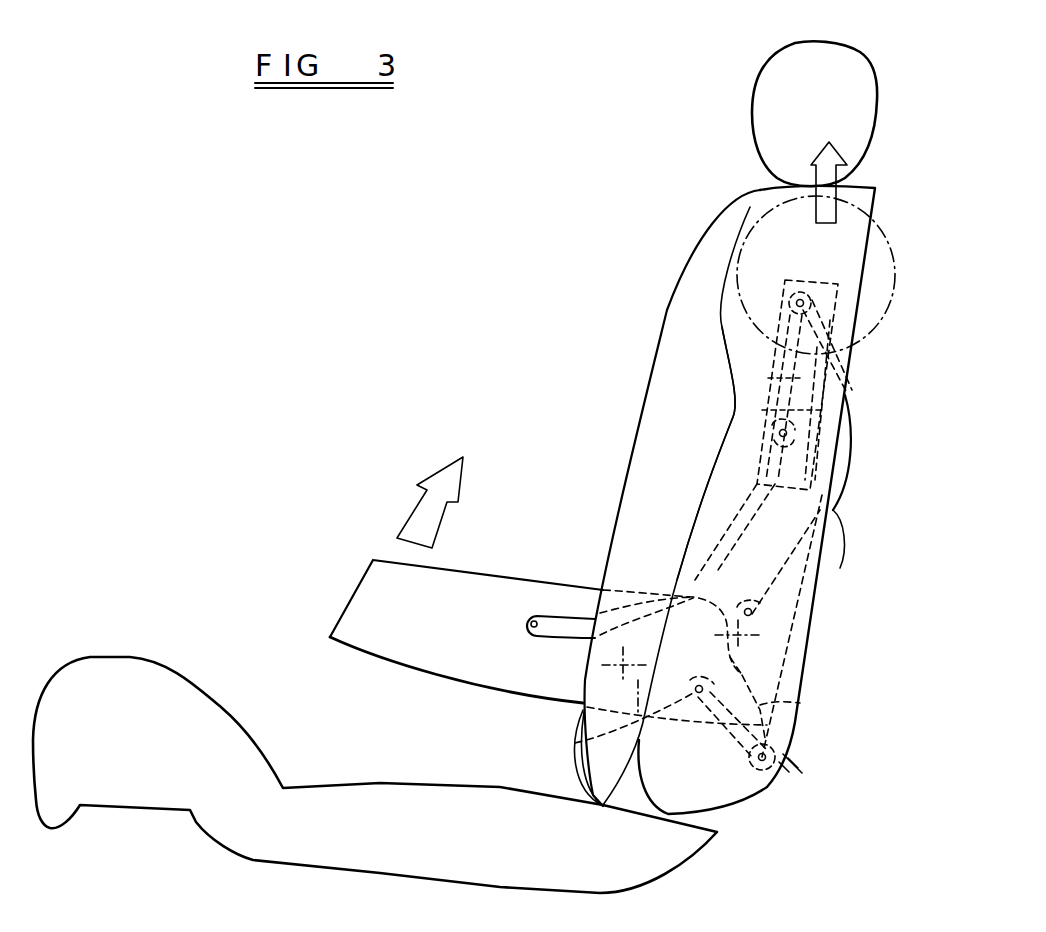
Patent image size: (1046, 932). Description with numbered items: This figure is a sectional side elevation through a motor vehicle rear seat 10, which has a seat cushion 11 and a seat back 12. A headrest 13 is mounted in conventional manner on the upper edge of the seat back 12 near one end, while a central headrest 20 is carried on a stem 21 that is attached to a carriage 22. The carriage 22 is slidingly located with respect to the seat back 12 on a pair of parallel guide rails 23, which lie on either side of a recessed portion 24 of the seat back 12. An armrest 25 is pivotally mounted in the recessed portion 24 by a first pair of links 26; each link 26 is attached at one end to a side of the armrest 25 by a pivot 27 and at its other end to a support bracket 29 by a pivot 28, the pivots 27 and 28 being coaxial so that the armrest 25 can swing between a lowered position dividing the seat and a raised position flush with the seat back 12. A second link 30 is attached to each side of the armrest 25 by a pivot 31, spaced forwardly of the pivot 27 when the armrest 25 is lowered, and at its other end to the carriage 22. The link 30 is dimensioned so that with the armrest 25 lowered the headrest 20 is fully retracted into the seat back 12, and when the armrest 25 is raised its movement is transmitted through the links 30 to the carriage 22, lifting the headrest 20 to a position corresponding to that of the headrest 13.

The rear seat 10 is at (482, 314).
The seat cushion 11 is at (100, 667).
The seat back 12 is at (690, 281).
The headrest 13 is at (764, 100).
The central headrest 20 is at (771, 240).
The stem 21 is at (783, 380).
The carriage 22 is at (772, 430).
The guide rails 23 is at (812, 358).
The recessed portion 24 is at (712, 480).
The armrest 25 is at (352, 603).
The first link 26 is at (800, 703).
The pivot 27 is at (575, 743).
The pivot 28 is at (790, 760).
The support bracket 29 is at (768, 780).
The second link 30 is at (700, 592).
The pivot 31 is at (535, 615).